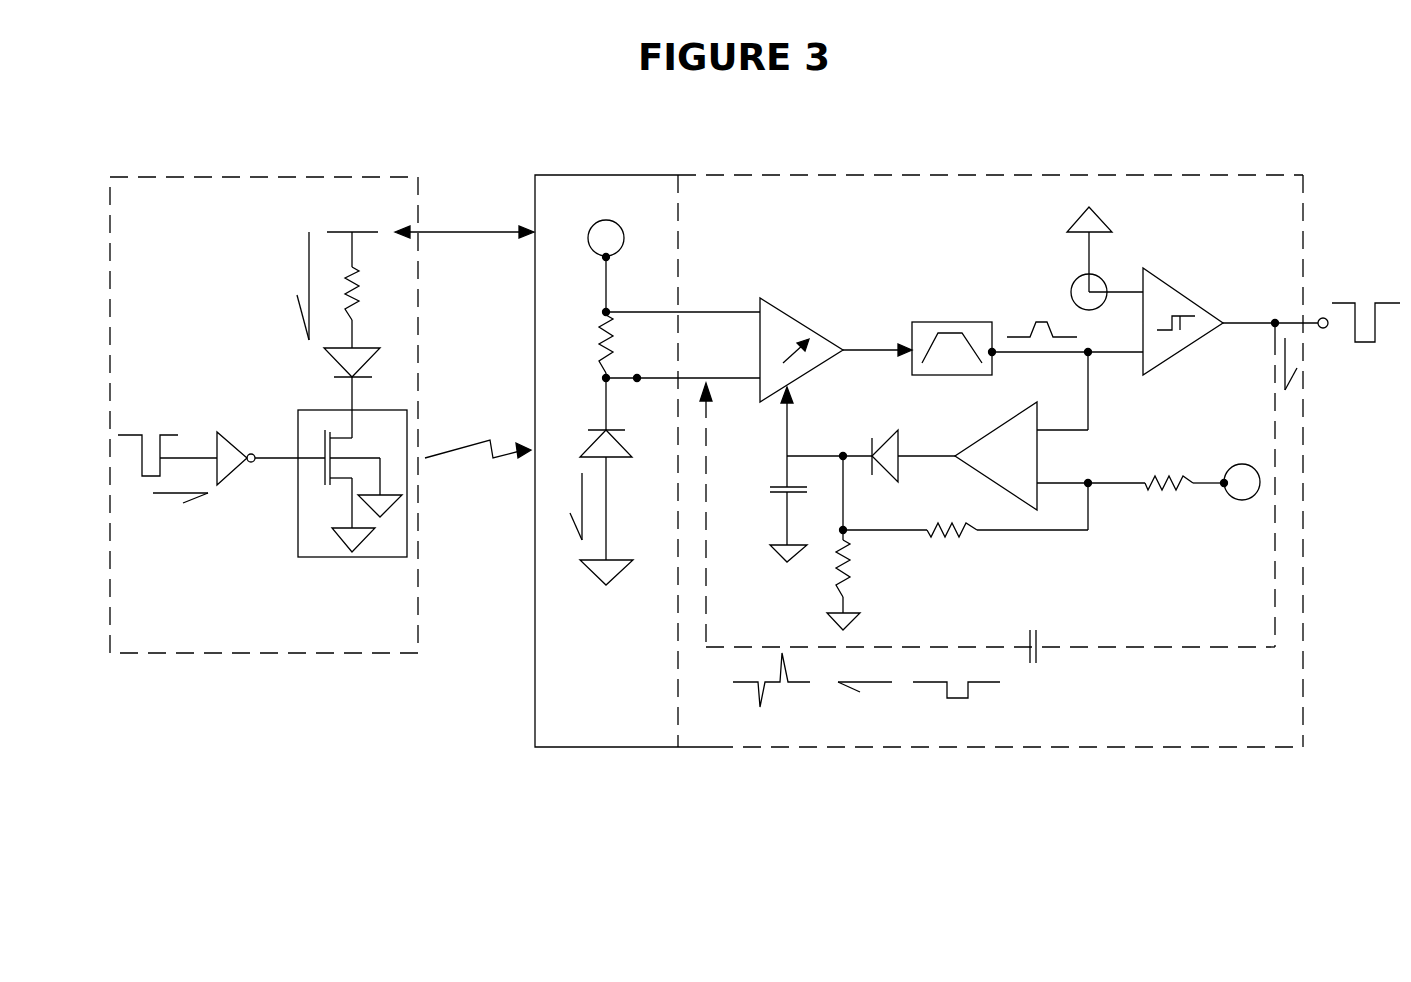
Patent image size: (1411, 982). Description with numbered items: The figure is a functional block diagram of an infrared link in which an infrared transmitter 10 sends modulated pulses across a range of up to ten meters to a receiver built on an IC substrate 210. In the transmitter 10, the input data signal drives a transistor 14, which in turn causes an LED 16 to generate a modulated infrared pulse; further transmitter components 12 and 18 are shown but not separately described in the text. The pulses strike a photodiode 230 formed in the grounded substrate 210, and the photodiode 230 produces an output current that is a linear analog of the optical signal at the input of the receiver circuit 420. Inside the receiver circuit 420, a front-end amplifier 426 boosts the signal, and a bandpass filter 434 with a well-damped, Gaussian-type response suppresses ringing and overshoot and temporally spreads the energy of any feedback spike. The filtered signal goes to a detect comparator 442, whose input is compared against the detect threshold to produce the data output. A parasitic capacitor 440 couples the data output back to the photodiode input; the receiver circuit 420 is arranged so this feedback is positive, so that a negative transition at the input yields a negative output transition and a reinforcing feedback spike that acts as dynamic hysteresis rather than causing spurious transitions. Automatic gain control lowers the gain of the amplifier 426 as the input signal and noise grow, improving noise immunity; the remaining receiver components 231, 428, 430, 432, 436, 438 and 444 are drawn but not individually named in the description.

The infrared transmitter 10 is at (267, 177).
The inverter 12 is at (223, 432).
The transistor 14 is at (298, 487).
The LED 16 is at (330, 356).
The resistor 18 is at (360, 285).
The IC substrate 210 is at (593, 175).
The photodiode 230 is at (618, 457).
The input resistor 231 is at (610, 318).
The receiver circuit 420 is at (871, 237).
The amplifier 426 is at (788, 307).
The capacitor 428 is at (783, 487).
The resistor 430 is at (853, 567).
The diode 432 is at (898, 447).
The bandpass filter 434 is at (977, 322).
The AGC amplifier 436 is at (1000, 425).
The feedback resistor 438 is at (943, 537).
The parasitic capacitor 440 is at (1037, 660).
The detect comparator 442 is at (1167, 270).
The resistor 444 is at (1145, 477).